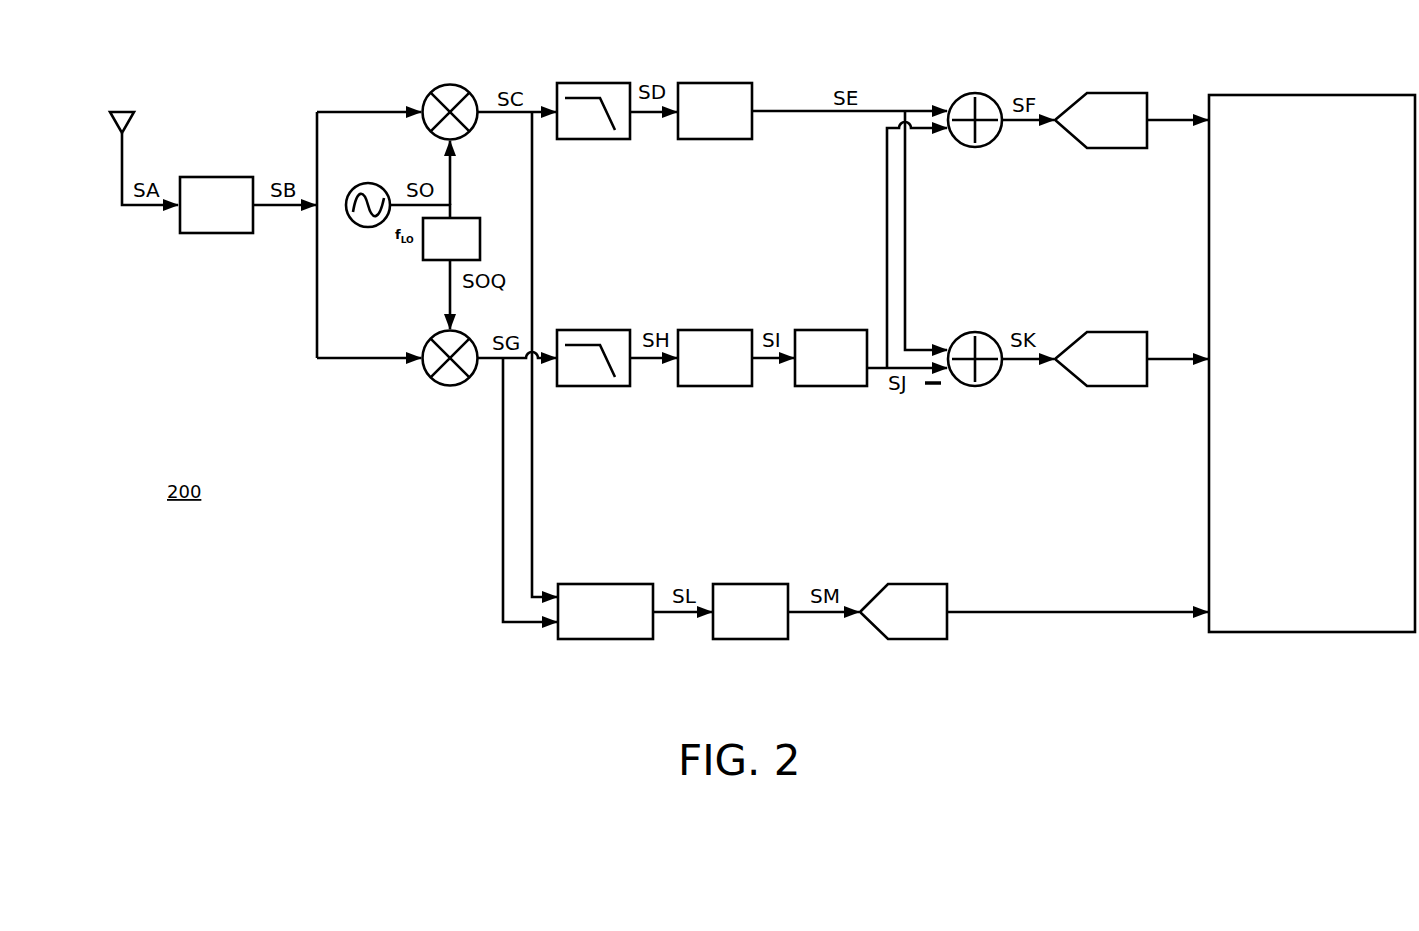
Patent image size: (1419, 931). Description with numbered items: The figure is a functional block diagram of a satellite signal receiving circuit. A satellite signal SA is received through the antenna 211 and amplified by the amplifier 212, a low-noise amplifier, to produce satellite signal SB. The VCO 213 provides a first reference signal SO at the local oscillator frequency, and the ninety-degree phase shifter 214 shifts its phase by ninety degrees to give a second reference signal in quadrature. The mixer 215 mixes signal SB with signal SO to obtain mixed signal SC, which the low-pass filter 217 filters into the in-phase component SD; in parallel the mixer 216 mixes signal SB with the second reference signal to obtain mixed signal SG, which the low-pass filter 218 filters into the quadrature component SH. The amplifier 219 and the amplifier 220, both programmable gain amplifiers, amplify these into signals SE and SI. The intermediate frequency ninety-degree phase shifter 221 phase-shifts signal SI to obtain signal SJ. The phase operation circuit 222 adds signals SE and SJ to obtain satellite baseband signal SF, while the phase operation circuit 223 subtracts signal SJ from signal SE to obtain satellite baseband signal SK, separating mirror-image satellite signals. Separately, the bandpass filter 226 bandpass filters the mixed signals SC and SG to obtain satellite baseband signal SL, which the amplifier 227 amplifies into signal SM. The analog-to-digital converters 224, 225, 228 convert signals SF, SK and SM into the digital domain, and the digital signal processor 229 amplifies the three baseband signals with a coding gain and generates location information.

The antenna 211 is at (104, 118).
The amplifier 212 is at (203, 177).
The VCO 213 is at (357, 228).
The 90° phase shifter 214 is at (427, 263).
The mixer 215 is at (441, 86).
The mixer 216 is at (440, 382).
The low-pass filter 217 is at (585, 83).
The low-pass filter 218 is at (578, 386).
The amplifier 219 is at (700, 83).
The amplifier 220 is at (703, 386).
The intermediate frequency 90° phase shifter 221 is at (820, 386).
The phase operation circuit 222 is at (970, 93).
The phase operation circuit 223 is at (975, 386).
The analog-to-digital converter 224 is at (1100, 93).
The analog-to-digital converter 225 is at (1100, 386).
The bandpass filter 226 is at (590, 639).
The amplifier 227 is at (738, 639).
The analog-to-digital converter 228 is at (907, 639).
The digital signal processor 229 is at (1300, 95).